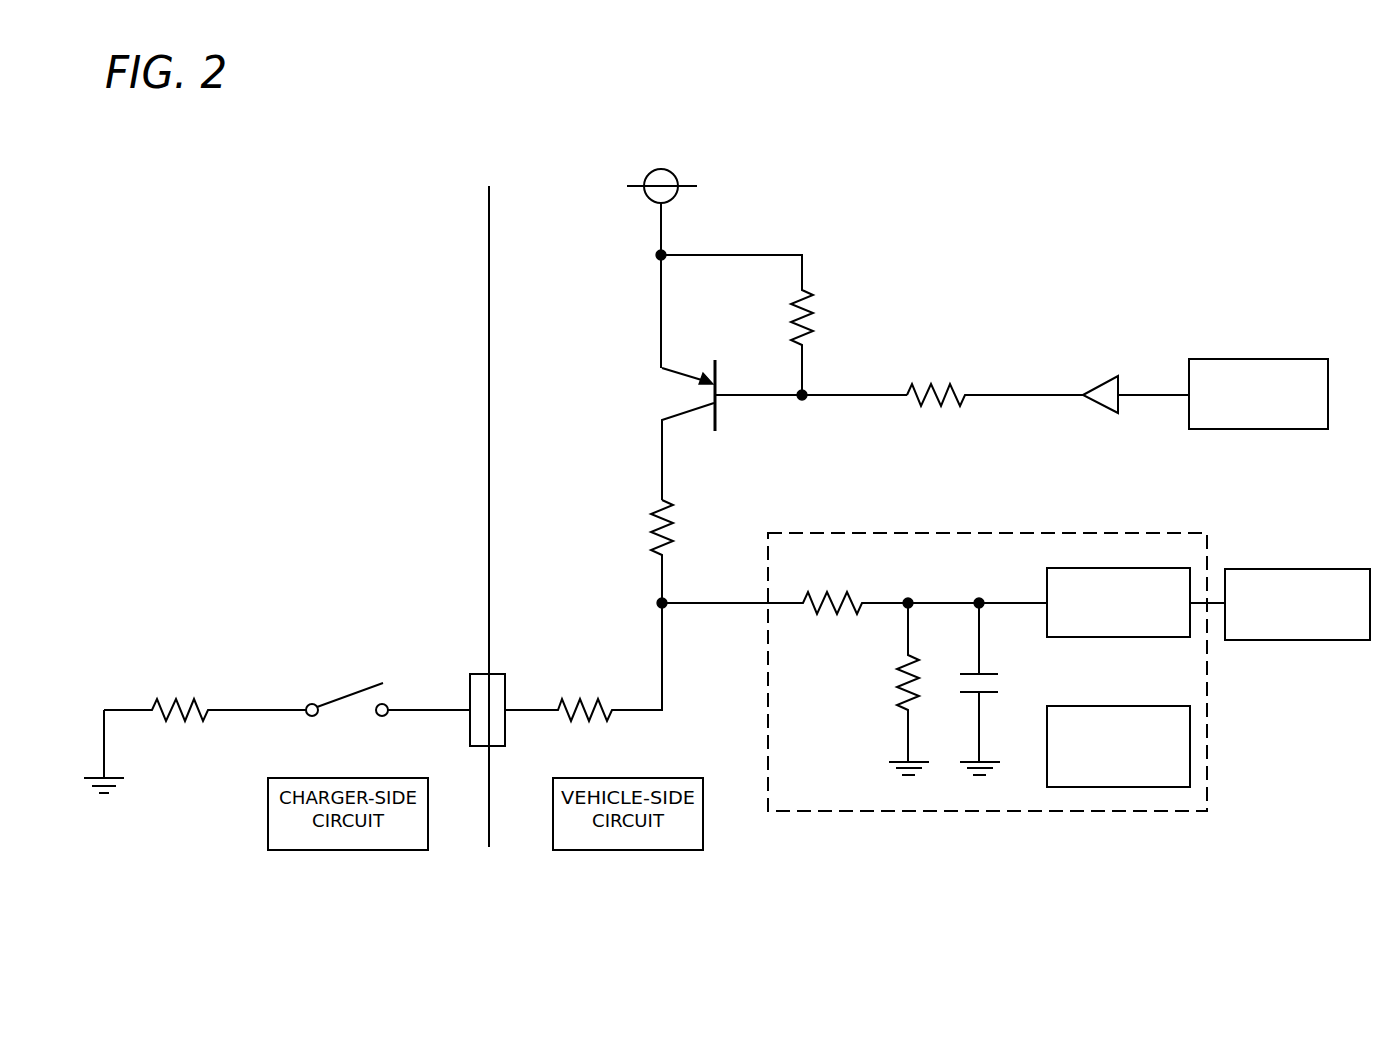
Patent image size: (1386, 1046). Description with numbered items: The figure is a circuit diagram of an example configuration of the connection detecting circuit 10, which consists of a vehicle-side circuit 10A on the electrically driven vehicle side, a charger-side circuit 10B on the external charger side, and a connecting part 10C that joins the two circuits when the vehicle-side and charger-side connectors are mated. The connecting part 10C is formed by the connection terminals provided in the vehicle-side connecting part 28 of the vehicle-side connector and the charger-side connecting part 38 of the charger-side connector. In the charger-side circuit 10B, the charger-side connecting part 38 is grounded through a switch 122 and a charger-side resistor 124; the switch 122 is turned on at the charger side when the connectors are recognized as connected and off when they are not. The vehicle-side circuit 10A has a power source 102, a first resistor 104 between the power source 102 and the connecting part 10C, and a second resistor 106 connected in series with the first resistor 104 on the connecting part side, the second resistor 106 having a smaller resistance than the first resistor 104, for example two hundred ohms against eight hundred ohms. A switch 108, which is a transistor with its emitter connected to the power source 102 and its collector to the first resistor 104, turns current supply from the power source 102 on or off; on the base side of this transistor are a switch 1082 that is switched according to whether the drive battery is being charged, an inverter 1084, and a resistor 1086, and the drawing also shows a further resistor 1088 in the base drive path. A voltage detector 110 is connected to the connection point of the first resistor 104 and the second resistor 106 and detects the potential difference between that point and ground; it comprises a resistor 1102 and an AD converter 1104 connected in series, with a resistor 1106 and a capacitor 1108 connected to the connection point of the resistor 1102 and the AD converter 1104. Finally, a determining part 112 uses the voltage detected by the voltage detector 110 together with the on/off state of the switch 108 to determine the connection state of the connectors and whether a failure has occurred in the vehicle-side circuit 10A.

The connection detecting circuit 10 is at (510, 170).
The vehicle-side circuit 10A is at (1020, 242).
The charger-side circuit 10B is at (243, 290).
The connecting part 10C is at (545, 545).
The charger-side connecting part 38 is at (485, 674).
The vehicle-side connecting part 28 is at (497, 674).
The power source 102 is at (680, 174).
The first resistor 104 is at (650, 513).
The second resistor 106 is at (612, 722).
The switch 108 is at (718, 372).
The switch 1082 is at (1250, 358).
The inverter 1084 is at (1102, 385).
The resistor 1086 is at (935, 398).
The resistor 1088 is at (822, 315).
The voltage detector 110 is at (1052, 533).
The resistor 1102 is at (835, 590).
The AD converter 1104 is at (1118, 568).
The resistor 1106 is at (897, 692).
The capacitor 1108 is at (1000, 690).
The determining part 112 is at (1292, 568).
The switch 122 is at (314, 703).
The charger-side resistor 124 is at (152, 700).